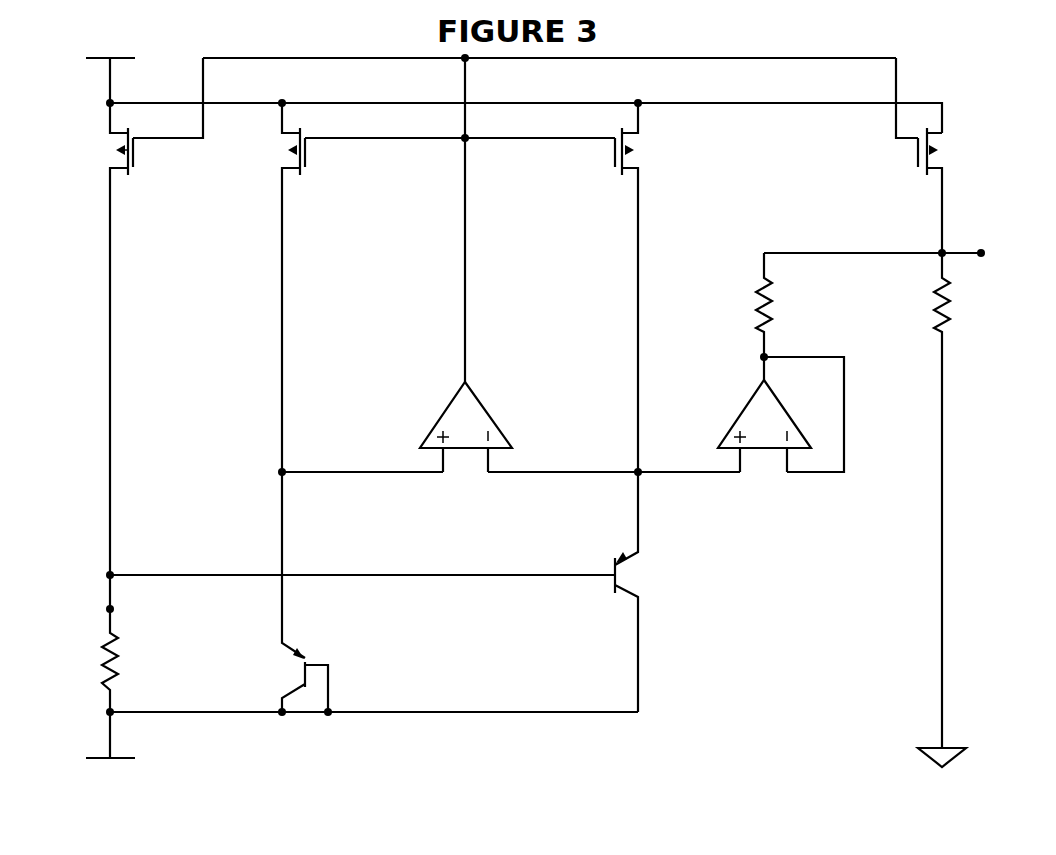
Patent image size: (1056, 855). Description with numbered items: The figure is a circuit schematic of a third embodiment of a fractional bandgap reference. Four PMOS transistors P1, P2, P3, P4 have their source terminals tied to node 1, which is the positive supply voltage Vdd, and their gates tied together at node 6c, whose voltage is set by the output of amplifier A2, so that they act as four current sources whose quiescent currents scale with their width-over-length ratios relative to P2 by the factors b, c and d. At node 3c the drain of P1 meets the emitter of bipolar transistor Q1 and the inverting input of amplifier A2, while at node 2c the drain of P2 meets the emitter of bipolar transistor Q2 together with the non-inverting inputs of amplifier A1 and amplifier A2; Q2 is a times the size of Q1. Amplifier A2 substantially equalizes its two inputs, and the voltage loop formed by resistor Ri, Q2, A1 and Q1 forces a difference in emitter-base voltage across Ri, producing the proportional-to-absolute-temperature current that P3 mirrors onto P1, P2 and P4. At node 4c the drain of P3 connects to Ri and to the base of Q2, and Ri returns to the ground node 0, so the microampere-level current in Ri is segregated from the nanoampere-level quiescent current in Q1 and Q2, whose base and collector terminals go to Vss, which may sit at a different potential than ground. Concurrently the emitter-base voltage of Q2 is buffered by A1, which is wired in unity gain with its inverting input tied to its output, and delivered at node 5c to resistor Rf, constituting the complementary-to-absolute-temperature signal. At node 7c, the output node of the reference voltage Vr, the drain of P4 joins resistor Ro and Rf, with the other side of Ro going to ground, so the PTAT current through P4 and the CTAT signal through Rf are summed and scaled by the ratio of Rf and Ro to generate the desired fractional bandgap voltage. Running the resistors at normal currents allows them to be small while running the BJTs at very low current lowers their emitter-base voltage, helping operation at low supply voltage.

The node 1 is at (511, 109).
The node 0 is at (362, 727).
The node 2c is at (614, 458).
The node 3c is at (360, 458).
The node 4c is at (360, 562).
The node 5c is at (802, 441).
The node 6c is at (482, 258).
The node 7c is at (874, 241).
The transistor P1c P1 is at (343, 287).
The transistor P2c P2 is at (581, 287).
The transistor P3c P3 is at (90, 339).
The transistor P4c P4 is at (960, 190).
The BJT Q1c Q1 is at (274, 592).
The BJT Q2c Q2 is at (657, 592).
The amplifier A1c A1 is at (733, 414).
The amplifier A2c A2 is at (437, 406).
The resistor Ric Ri is at (96, 643).
The resistor Rfc Rf is at (750, 305).
The resistor ROc Ro is at (928, 500).
The reference voltage Vrc Vr is at (1008, 311).
The positive supply voltage VDD Vdd is at (472, 89).
The supply voltage VSS Vss is at (84, 746).